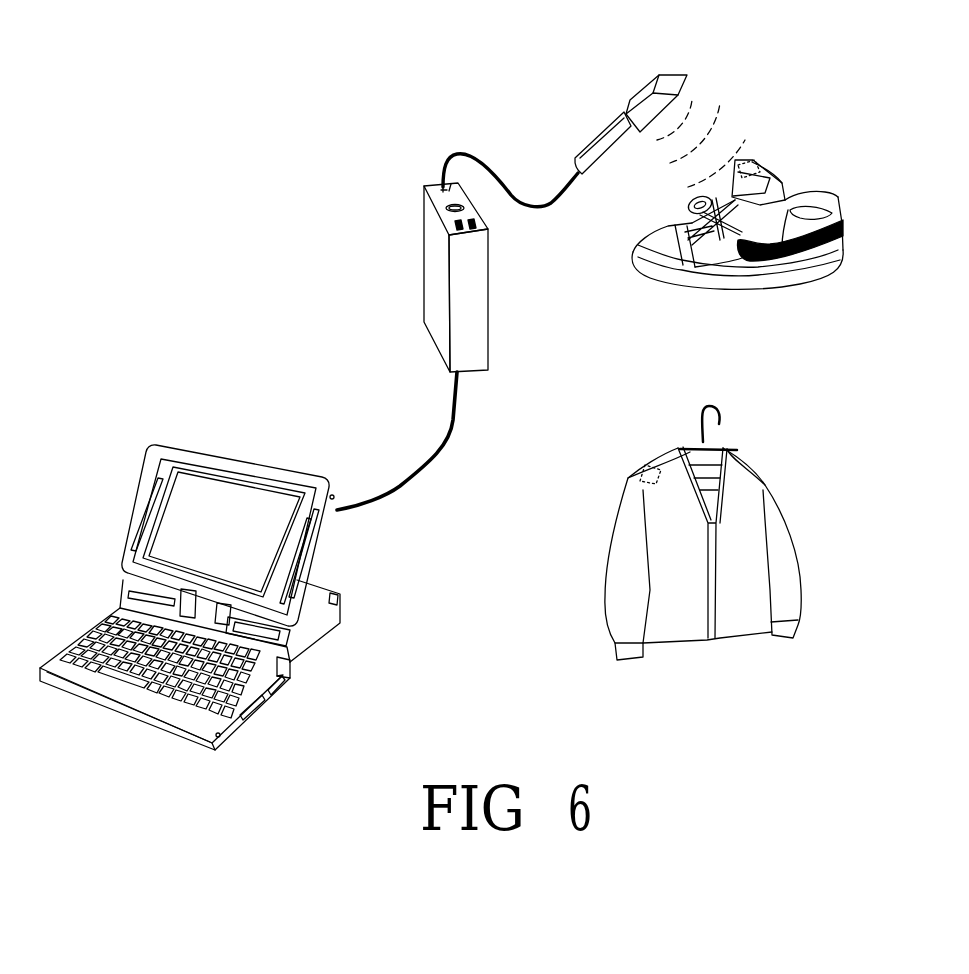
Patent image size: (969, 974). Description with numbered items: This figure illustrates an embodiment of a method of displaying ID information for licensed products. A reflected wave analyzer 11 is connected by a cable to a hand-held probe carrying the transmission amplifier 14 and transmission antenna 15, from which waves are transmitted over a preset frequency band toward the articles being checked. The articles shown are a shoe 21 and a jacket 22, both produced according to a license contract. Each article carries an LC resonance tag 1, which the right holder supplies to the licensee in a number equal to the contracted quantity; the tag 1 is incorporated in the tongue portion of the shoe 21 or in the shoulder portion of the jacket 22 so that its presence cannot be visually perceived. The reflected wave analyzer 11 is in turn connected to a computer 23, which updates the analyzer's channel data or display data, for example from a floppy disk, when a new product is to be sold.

The LC resonance tag 1 is at (732, 168).
The reflected wave analyzer 11 is at (412, 266).
The transmission amplifier 14 is at (659, 105).
The transmission antenna 15 is at (643, 82).
The shoe 21 is at (835, 192).
The jacket 22 is at (773, 473).
The computer 23 is at (185, 440).